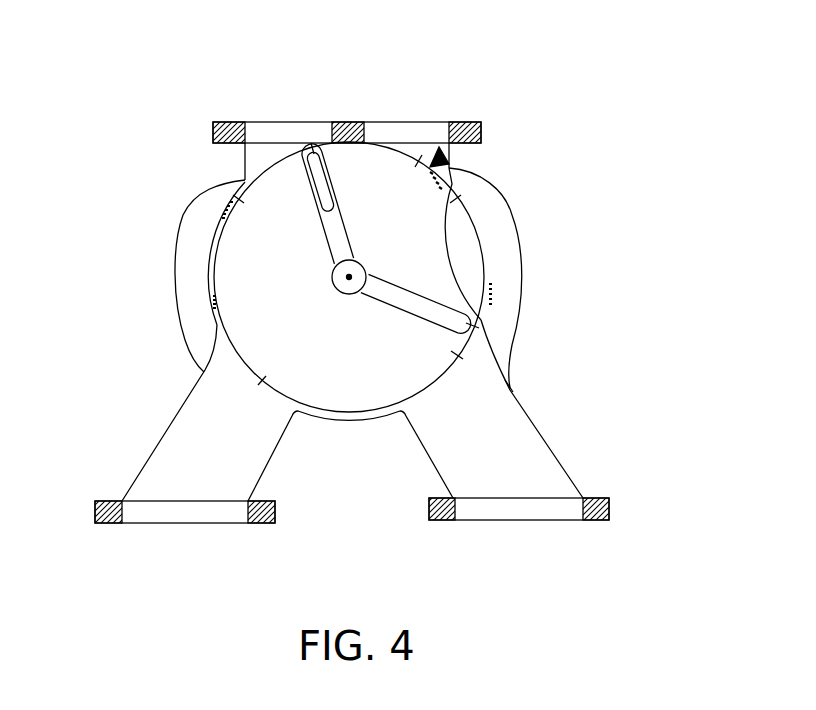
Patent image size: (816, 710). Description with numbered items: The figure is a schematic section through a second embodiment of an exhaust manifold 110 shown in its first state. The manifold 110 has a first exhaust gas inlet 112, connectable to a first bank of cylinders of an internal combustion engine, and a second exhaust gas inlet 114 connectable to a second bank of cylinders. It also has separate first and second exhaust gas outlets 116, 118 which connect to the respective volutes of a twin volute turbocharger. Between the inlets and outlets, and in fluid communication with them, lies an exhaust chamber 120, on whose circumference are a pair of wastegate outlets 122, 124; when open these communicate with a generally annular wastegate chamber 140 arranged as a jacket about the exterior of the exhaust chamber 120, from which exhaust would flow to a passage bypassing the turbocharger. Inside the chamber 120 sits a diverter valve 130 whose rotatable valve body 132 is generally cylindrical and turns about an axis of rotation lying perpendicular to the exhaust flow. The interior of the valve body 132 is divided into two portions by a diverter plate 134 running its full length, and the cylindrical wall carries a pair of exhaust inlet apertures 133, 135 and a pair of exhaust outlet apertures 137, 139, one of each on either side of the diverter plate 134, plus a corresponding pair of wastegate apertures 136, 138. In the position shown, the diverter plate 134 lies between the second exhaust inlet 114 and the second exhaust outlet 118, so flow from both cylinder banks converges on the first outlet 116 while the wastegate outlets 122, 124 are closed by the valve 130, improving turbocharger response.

The exhaust manifold 110 is at (577, 73).
The first exhaust gas inlet 112 is at (172, 468).
The second exhaust gas inlet 114 is at (503, 462).
The first exhaust gas outlet 116 is at (265, 132).
The second exhaust gas outlet 118 is at (373, 130).
The exhaust chamber 120 is at (450, 156).
The wastegate outlet 122 is at (212, 222).
The wastegate outlet 124 is at (490, 293).
The diverter valve 130 is at (345, 470).
The rotatable valve body 132 is at (510, 388).
The exhaust inlet aperture 133 is at (262, 380).
The diverter plate 134 is at (333, 237).
The exhaust inlet aperture 135 is at (488, 262).
The wastegate aperture 136 is at (220, 315).
The exhaust outlet aperture 137 is at (257, 172).
The wastegate aperture 138 is at (455, 178).
The exhaust outlet aperture 139 is at (402, 157).
The wastegate chamber 140 is at (198, 330).